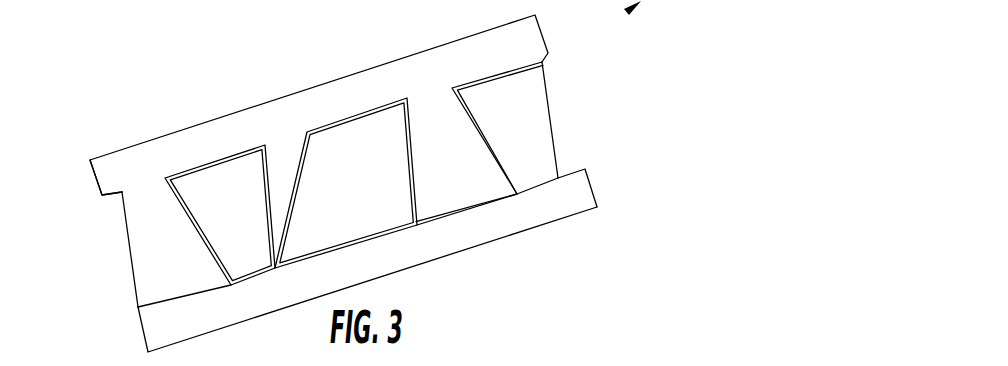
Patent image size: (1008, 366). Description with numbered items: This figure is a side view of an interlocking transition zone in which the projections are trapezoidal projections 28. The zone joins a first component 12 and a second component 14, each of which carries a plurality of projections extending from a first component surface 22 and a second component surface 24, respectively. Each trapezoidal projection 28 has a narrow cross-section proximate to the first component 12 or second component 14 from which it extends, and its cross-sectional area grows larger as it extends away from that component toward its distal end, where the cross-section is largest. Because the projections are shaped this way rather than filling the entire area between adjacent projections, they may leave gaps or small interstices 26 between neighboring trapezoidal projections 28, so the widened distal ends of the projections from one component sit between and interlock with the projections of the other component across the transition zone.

The first component 12 is at (428, 237).
The second component 14 is at (252, 135).
The first component surface 22 is at (572, 167).
The second component surface 24 is at (113, 194).
The interstices 26 is at (137, 307).
The trapezoidal projection 28 is at (514, 118).